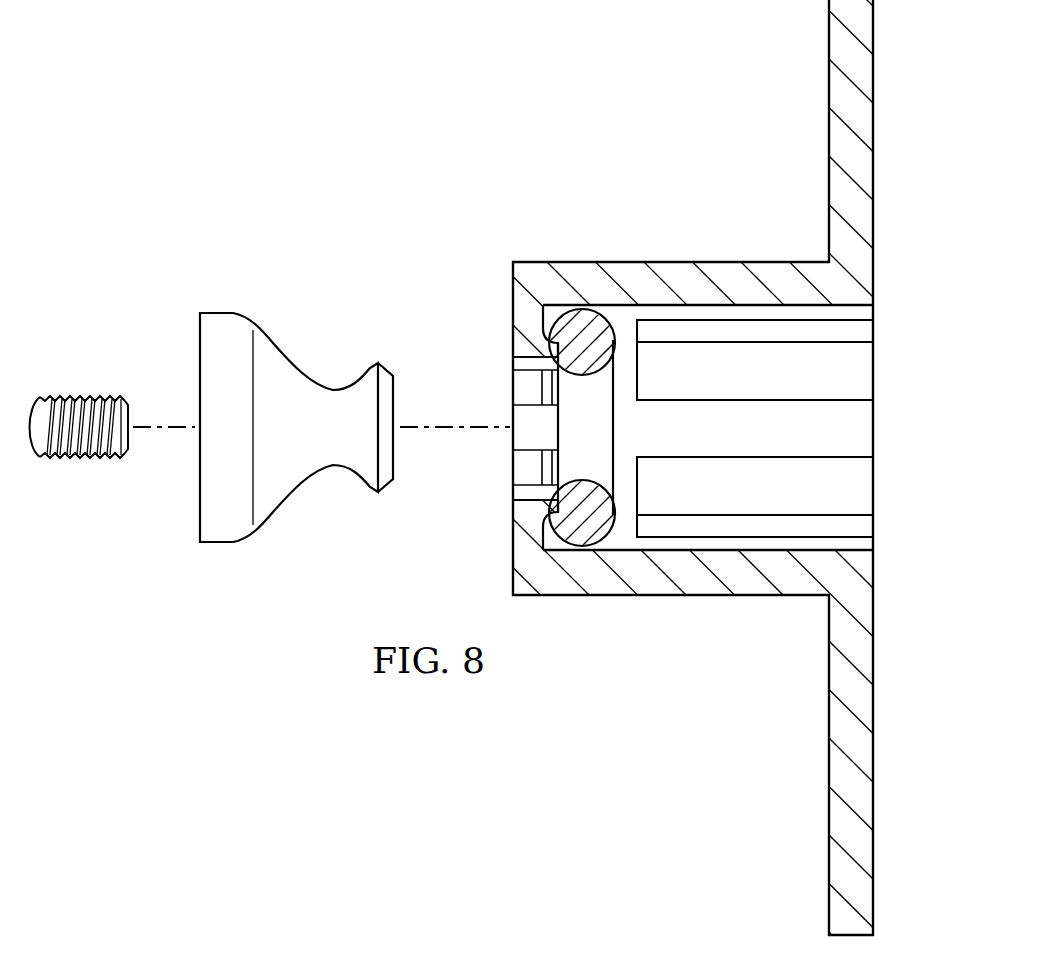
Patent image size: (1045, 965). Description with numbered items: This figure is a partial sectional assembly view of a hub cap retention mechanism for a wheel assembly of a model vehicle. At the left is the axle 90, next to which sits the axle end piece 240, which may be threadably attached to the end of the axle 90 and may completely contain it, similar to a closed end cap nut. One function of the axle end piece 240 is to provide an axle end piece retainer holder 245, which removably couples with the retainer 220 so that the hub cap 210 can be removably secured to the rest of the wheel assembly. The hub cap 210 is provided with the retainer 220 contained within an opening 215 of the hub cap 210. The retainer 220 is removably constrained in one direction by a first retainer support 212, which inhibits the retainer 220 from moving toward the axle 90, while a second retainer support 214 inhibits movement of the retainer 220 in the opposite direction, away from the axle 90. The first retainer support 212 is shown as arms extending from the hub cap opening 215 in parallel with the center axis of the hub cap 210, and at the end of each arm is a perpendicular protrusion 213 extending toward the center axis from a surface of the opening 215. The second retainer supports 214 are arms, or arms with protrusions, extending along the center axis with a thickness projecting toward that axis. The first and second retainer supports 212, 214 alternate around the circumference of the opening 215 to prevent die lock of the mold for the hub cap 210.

The axle 90 is at (80, 395).
The axle end piece 240 is at (224, 543).
The axle end piece retainer holder 245 is at (364, 378).
The hub cap 210 is at (874, 125).
The first retainer support 212 is at (504, 347).
The perpendicular protrusion 213 is at (522, 313).
The second retainer support 214 is at (748, 382).
The hub cap opening 215 is at (864, 431).
The retainer 220 is at (593, 318).